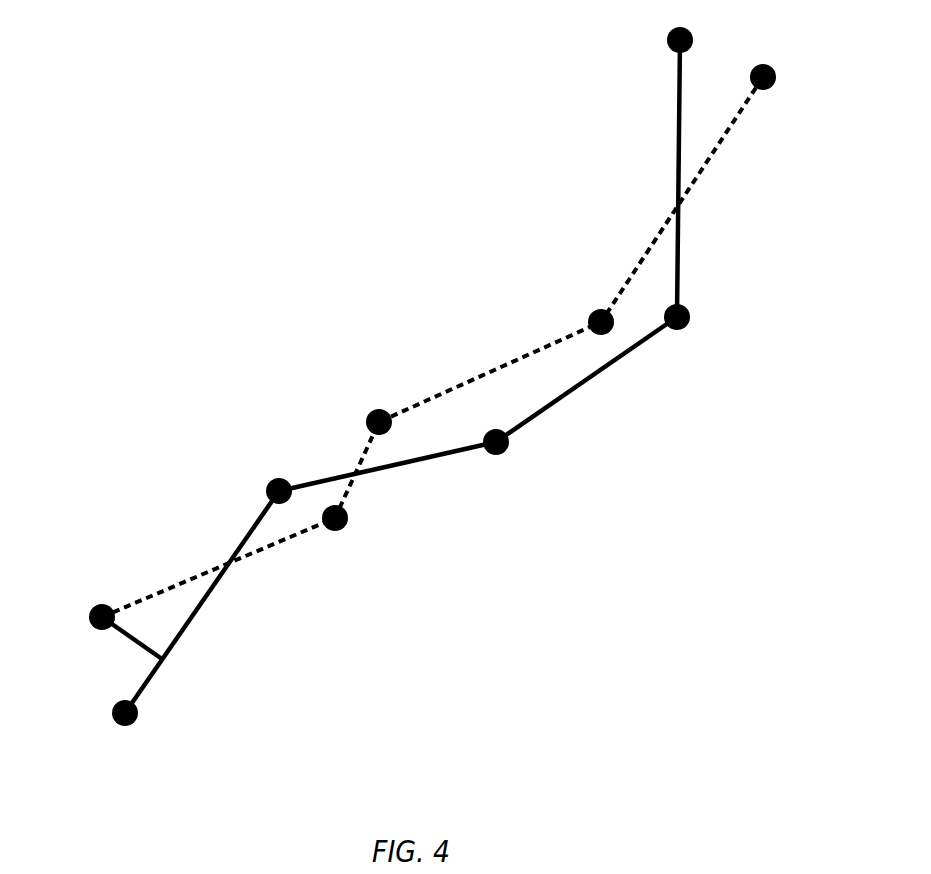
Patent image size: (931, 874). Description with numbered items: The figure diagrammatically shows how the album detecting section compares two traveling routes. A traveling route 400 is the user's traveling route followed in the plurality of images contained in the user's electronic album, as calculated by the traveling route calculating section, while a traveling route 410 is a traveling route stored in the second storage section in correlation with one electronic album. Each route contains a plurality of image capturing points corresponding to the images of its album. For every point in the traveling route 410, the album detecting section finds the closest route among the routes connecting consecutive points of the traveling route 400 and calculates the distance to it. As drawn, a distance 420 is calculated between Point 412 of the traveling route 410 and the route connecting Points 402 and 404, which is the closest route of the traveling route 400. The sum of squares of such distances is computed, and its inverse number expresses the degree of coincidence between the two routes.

The traveling route 400 is at (678, 127).
The traveling route 410 is at (729, 128).
The point 402 is at (138, 713).
The point 404 is at (271, 480).
The point 412 is at (100, 605).
The distance 420 is at (128, 641).